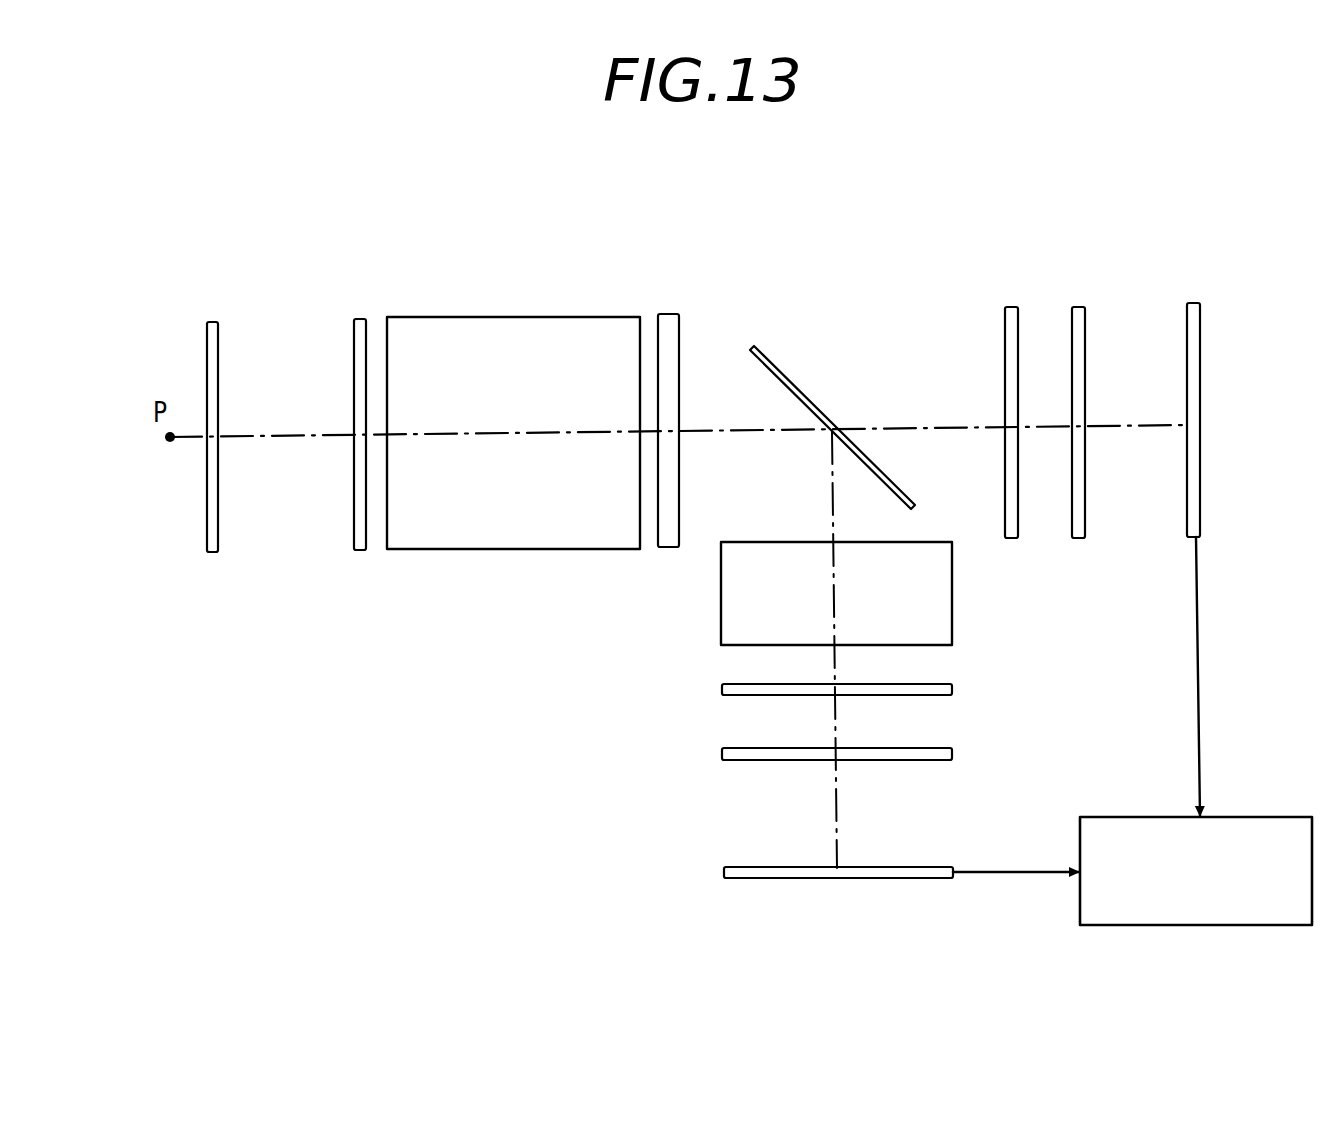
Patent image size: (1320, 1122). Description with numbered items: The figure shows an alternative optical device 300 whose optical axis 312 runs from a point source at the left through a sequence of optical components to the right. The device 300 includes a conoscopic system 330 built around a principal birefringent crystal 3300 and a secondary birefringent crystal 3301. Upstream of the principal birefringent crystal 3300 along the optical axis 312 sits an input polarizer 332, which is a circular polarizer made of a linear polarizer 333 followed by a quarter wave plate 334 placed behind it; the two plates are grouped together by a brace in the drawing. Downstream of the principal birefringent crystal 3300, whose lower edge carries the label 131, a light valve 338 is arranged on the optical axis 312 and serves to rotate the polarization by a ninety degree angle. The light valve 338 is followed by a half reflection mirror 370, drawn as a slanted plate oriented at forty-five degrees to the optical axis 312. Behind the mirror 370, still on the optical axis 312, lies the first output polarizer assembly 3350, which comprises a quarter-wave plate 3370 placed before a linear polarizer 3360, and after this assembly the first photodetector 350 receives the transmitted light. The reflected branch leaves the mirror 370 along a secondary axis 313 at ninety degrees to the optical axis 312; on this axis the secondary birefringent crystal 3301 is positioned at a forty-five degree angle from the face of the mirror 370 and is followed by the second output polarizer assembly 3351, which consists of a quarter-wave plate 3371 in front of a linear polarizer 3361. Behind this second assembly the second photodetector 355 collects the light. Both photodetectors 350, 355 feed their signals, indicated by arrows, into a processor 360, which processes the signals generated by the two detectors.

The optical device 300 is at (271, 401).
The optical axis 312 is at (263, 436).
The secondary axis 313 is at (830, 465).
The conoscopic system 330 is at (571, 388).
The principal birefringent crystal 3300 is at (483, 342).
The secondary birefringent crystal 3301 is at (730, 598).
The optical element 131 is at (490, 550).
The input polarizer 332 is at (261, 476).
The linear polarizer 333 is at (207, 508).
The quarter wave plate 334 is at (320, 434).
The light valve 338 is at (680, 328).
The first photodetector 350 is at (1200, 343).
The second photodetector 355 is at (725, 870).
The processor 360 is at (1277, 817).
The half reflection mirror 370 is at (783, 371).
The first output polarizer assembly 3350 is at (1007, 413).
The second output polarizer assembly 3351 is at (846, 716).
The linear polarizer 3360 is at (1078, 540).
The linear polarizer 3361 is at (952, 754).
The quarter-wave plate 3370 is at (1005, 344).
The quarter-wave plate 3371 is at (952, 690).